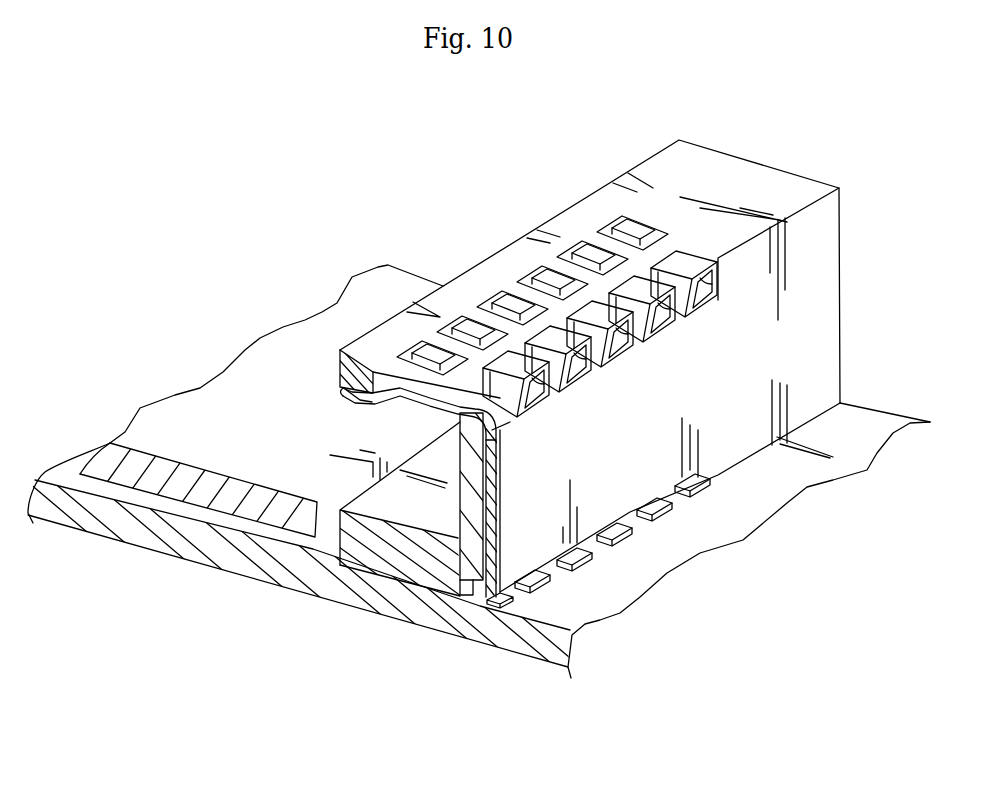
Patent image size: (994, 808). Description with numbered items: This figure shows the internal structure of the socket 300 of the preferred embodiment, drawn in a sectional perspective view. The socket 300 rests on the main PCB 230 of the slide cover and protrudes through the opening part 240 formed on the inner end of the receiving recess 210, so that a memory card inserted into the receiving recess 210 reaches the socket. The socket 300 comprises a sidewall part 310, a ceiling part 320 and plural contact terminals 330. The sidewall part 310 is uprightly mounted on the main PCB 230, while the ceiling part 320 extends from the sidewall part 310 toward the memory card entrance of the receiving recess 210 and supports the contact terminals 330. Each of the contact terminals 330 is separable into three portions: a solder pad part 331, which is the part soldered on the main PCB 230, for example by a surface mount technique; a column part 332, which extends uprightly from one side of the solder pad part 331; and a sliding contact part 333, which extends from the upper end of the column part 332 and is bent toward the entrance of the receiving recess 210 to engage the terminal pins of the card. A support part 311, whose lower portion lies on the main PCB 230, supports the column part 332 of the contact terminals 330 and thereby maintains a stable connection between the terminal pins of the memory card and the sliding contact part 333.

The receiving recess 210 is at (203, 410).
The main PCB 230 is at (205, 547).
The opening part 240 is at (340, 578).
The socket 300 is at (577, 202).
The sidewall part 310 is at (510, 523).
The support part 311 is at (402, 567).
The ceiling part 320 is at (340, 367).
The contact terminals 330 is at (465, 600).
The solder pad part 331 is at (585, 565).
The column part 332 is at (490, 473).
The sliding contact part 333 is at (365, 393).